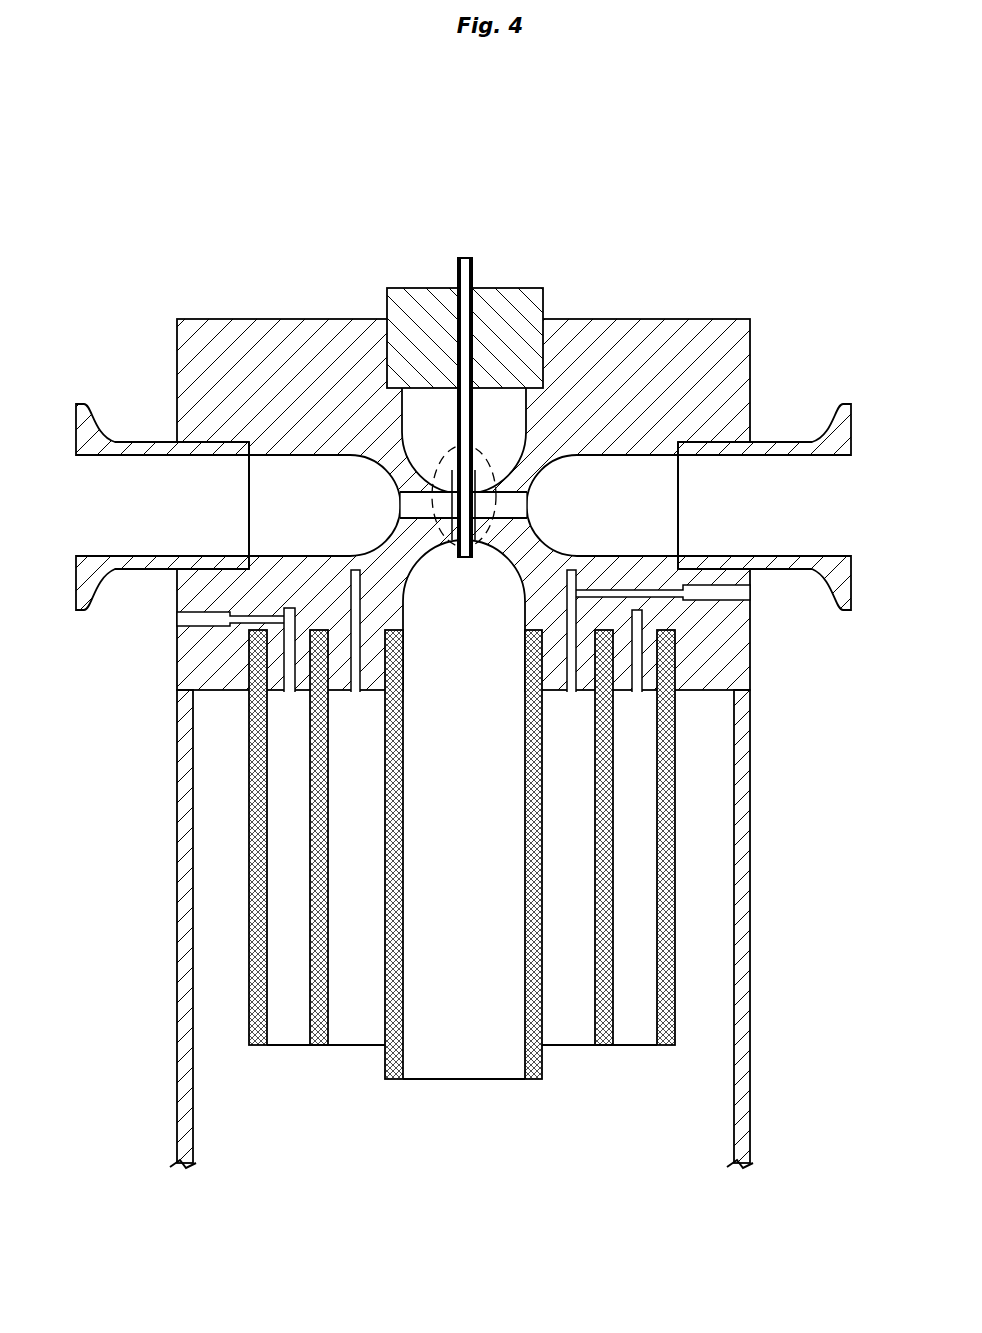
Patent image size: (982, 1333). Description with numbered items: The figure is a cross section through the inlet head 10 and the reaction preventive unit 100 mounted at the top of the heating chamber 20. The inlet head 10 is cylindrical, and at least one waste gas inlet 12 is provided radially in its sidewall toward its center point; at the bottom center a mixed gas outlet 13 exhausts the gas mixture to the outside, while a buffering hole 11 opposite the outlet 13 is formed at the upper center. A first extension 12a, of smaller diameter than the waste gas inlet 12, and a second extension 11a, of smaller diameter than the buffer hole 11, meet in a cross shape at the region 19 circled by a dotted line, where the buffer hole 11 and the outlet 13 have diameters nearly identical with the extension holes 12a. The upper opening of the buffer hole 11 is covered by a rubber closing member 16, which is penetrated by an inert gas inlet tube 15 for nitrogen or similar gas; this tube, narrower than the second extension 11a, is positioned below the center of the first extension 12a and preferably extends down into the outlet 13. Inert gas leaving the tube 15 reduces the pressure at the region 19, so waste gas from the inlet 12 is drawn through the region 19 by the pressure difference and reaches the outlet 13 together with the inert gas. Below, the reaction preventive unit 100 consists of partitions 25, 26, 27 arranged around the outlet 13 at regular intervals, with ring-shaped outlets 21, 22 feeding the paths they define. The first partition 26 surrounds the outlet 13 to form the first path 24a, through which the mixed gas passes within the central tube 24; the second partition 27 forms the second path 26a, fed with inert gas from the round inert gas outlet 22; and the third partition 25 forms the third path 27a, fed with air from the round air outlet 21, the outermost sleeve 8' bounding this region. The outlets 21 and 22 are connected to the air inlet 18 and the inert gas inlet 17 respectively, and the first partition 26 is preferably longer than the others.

The inlet head 10 is at (606, 264).
The buffering hole 11 is at (418, 443).
The second extension 11a is at (480, 476).
The waste gas inlet 12 is at (303, 522).
The first extension 12a is at (422, 512).
The mixed gas outlet 13 is at (479, 652).
The inert gas inlet tube 15 is at (480, 297).
The closing member 16 is at (421, 296).
The inert gas inlet 17 is at (743, 592).
The air inlet 18 is at (187, 620).
The region 19 is at (470, 453).
The heating chamber 20 is at (778, 910).
The air outlet 21 is at (289, 692).
The inert gas outlet 22 is at (357, 692).
The central tube 24 is at (484, 1047).
The first path 24a is at (454, 877).
The third partition 25 is at (250, 1020).
The first partition 26 is at (388, 1080).
The second path 26a is at (373, 877).
The second partition 27 is at (314, 1046).
The third path 27a is at (305, 877).
The outer sleeve 8' is at (647, 871).
The reaction preventive unit 100 is at (218, 917).